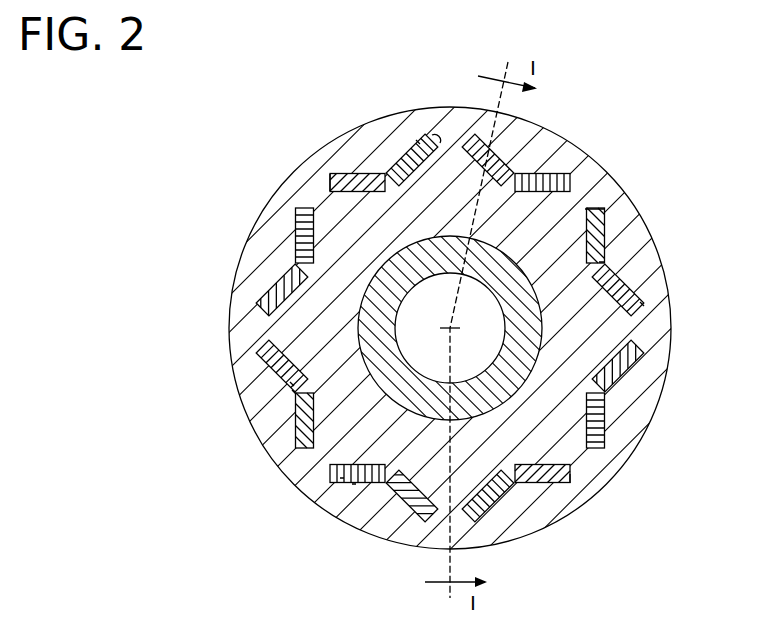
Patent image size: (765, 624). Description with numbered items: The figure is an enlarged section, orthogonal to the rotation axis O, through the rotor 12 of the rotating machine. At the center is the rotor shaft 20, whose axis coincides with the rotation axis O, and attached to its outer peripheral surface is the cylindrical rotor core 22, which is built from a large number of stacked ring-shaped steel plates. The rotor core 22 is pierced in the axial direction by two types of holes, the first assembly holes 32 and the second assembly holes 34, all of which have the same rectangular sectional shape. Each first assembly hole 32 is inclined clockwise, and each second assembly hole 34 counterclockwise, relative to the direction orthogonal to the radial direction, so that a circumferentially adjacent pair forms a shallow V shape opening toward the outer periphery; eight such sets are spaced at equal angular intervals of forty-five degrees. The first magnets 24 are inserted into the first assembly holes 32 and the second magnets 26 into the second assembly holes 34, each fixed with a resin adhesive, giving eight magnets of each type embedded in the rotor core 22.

The rotor 12 is at (640, 122).
The rotor shaft 20 is at (522, 338).
The rotor core 22 is at (312, 192).
The first magnet 24 is at (366, 173).
The second magnet 26 is at (416, 140).
The first assembly hole 32 is at (340, 176).
The second assembly hole 34 is at (438, 146).